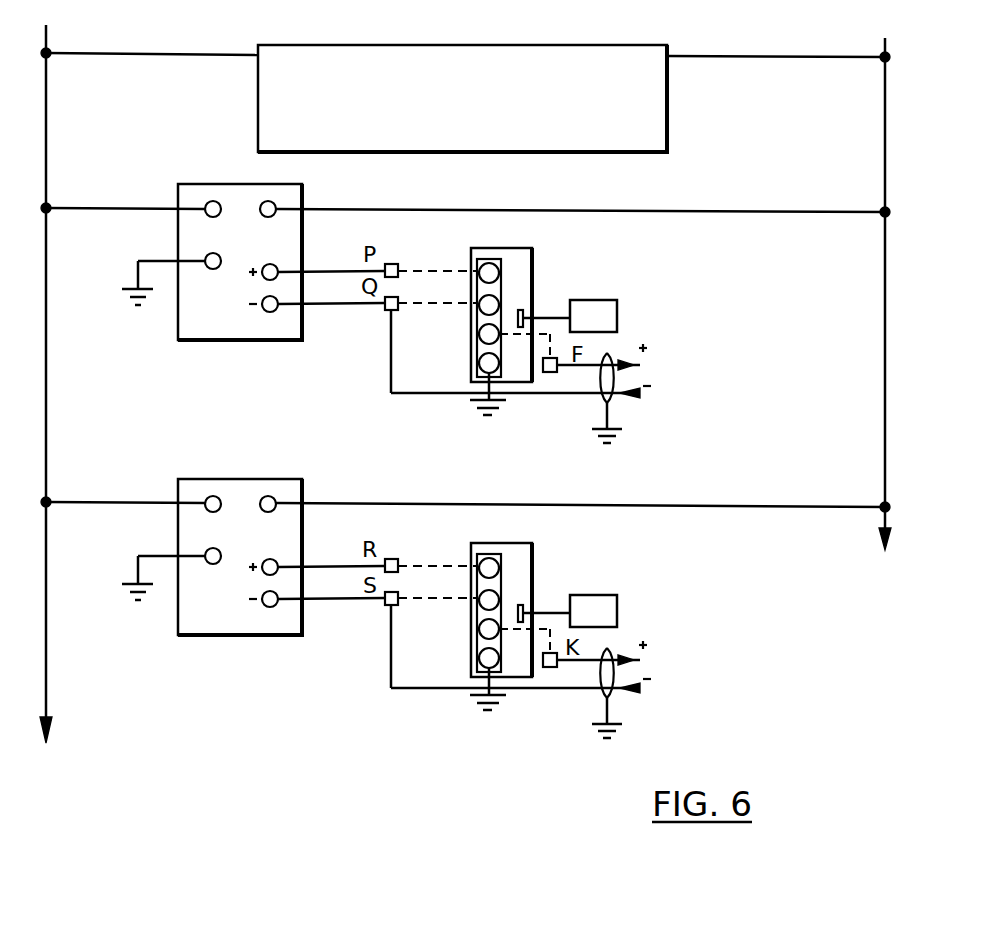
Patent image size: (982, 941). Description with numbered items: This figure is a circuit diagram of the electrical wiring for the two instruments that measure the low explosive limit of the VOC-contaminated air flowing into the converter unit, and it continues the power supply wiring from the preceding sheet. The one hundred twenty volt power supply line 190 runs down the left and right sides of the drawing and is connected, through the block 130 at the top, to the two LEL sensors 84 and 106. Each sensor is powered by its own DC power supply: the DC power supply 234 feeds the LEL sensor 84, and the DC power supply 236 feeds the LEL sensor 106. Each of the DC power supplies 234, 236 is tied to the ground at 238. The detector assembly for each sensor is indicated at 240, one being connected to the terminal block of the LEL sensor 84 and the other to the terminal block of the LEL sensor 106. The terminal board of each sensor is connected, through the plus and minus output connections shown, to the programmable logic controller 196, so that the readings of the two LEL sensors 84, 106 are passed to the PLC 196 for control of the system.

The power supply unit 130 is at (477, 127).
The 120 volt power supply line 190 is at (46, 152).
The DC power supply 234 is at (302, 200).
The DC power supply 236 is at (277, 549).
The ground 238 is at (152, 261).
The LEL sensor 84 is at (532, 293).
The LEL sensor 106 is at (550, 620).
The detector assembly 240 is at (617, 322).
The programmable logic controller 196 is at (646, 541).